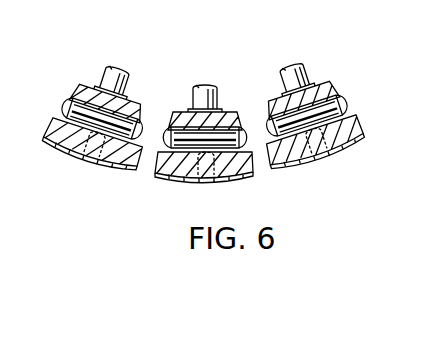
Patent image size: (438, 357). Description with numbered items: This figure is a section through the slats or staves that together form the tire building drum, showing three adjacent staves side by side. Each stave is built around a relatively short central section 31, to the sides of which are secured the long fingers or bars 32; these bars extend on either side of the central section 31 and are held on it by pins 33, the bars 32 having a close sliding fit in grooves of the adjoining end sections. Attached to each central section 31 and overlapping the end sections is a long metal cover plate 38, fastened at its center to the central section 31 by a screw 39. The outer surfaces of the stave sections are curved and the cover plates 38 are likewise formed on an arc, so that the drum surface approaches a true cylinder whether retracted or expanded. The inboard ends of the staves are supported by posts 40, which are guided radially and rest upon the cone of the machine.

The central section 31 is at (63, 122).
The bars 32 is at (136, 112).
The pins 33 is at (72, 110).
The cover plates 38 is at (60, 143).
The screws 39 is at (103, 153).
The posts 40 is at (128, 83).